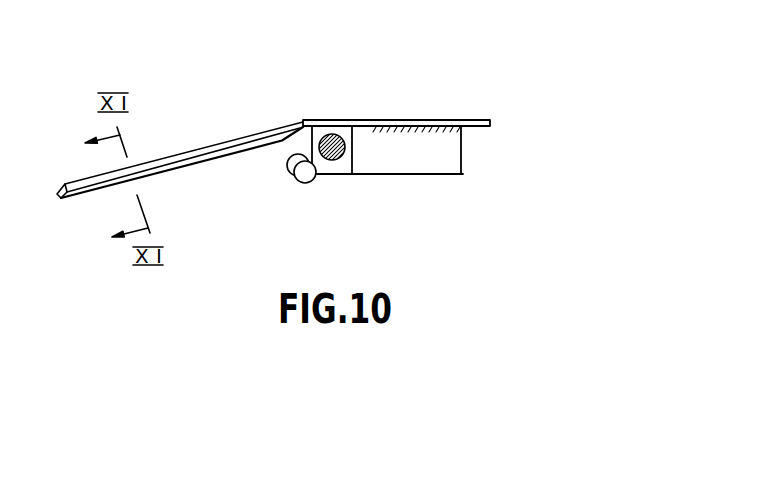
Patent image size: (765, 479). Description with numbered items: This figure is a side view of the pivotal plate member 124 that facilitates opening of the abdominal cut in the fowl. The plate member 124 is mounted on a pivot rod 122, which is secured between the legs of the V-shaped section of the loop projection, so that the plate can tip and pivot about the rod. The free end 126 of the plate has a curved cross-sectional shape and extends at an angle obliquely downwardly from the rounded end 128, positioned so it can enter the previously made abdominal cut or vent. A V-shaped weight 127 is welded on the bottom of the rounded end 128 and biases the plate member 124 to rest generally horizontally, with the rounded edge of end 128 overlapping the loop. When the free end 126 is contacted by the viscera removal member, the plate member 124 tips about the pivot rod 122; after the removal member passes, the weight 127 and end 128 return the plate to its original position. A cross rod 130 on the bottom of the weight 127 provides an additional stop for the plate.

The pivot rod 122 is at (338, 157).
The plate member 124 is at (419, 146).
The free end 126 is at (82, 197).
The V-shaped weight 127 is at (442, 165).
The rounded end 128 is at (486, 121).
The cross rod 130 is at (305, 177).